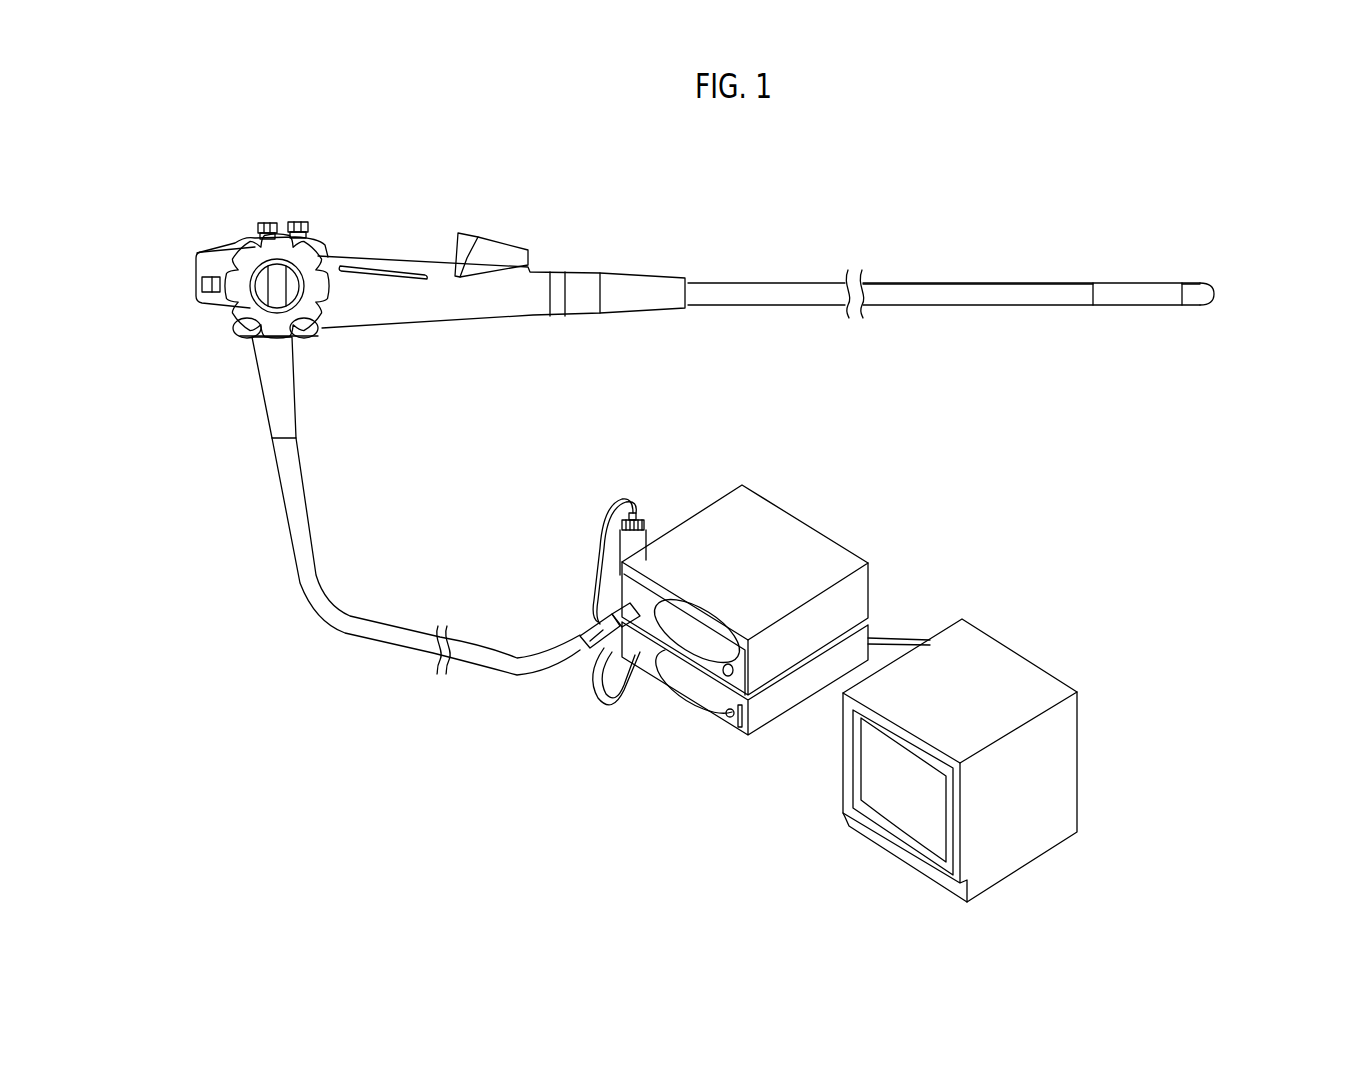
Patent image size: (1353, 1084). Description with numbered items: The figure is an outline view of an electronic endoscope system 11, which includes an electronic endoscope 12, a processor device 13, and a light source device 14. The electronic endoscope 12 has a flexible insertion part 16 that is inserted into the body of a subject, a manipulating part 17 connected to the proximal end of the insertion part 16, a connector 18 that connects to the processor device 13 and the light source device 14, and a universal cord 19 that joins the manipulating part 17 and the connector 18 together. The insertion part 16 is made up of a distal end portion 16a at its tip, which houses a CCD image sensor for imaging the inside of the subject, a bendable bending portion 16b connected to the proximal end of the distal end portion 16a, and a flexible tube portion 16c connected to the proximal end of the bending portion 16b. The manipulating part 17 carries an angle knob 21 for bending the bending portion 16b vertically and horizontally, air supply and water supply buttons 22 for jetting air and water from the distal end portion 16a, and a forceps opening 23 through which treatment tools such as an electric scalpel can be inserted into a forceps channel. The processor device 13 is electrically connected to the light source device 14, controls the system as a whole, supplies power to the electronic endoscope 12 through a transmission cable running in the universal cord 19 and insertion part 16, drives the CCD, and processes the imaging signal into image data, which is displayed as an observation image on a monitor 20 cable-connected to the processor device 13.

The electronic endoscope system 11 is at (306, 749).
The electronic endoscope 12 is at (692, 273).
The processor device 13 is at (717, 713).
The light source device 14 is at (795, 542).
The insertion part 16 is at (1227, 348).
The distal end portion 16a is at (1193, 297).
The bending portion 16b is at (1128, 297).
The flexible tube portion 16c is at (924, 297).
The manipulating part 17 is at (407, 313).
The connector 18 is at (592, 627).
The universal cord 19 is at (297, 513).
The monitor 20 is at (997, 662).
The angle knob 21 is at (243, 310).
The air supply and water supply buttons 22 is at (296, 221).
The forceps opening 23 is at (457, 240).